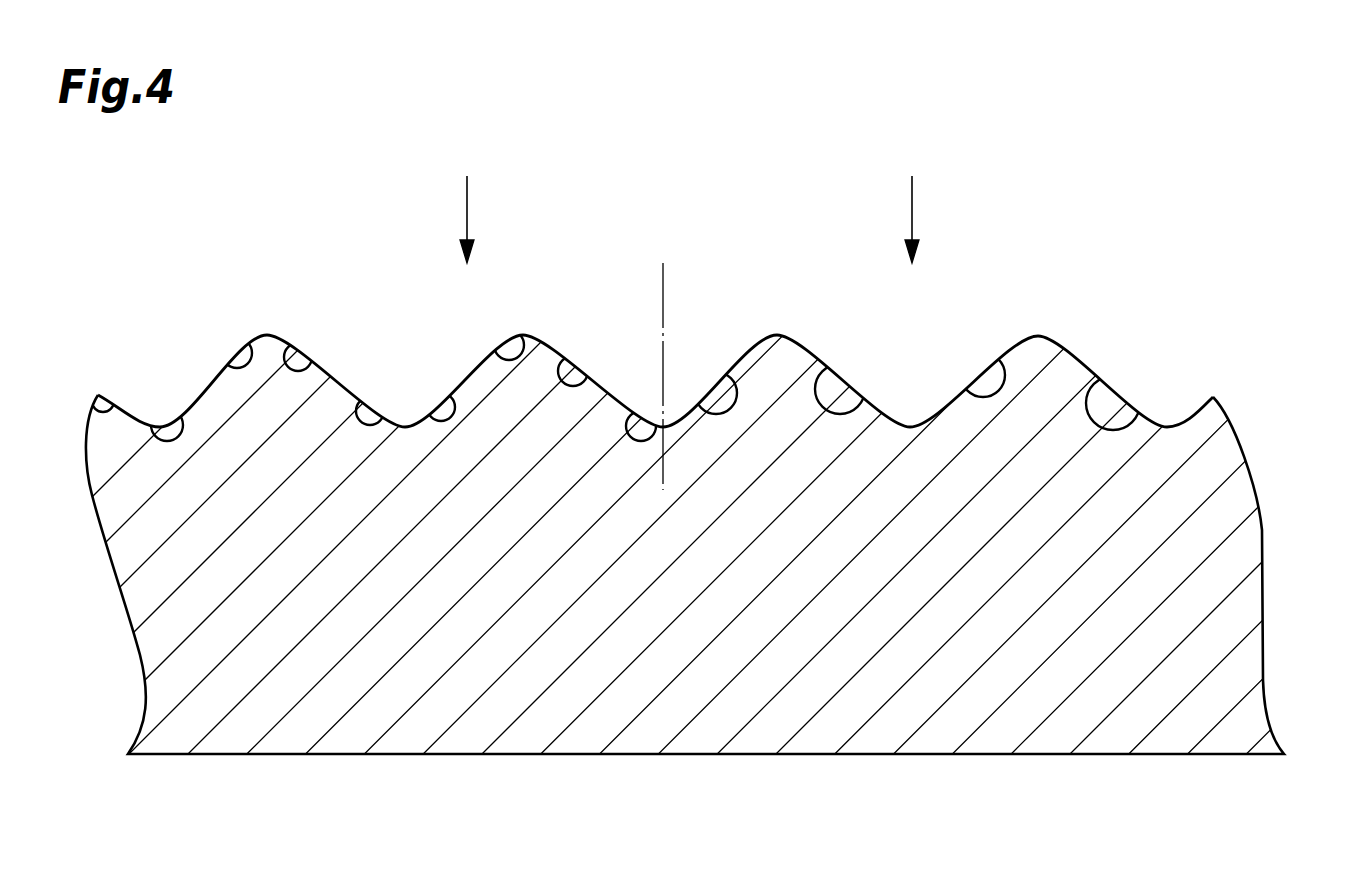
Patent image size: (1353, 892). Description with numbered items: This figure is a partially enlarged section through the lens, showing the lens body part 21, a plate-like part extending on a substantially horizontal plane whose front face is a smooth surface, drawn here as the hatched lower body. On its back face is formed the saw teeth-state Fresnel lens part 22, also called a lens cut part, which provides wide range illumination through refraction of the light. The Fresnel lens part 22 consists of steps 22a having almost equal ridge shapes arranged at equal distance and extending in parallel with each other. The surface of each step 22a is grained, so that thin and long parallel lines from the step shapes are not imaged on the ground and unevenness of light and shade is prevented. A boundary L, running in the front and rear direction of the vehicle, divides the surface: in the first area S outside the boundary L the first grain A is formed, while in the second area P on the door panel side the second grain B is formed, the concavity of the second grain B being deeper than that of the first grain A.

The lens body part 21 is at (1245, 550).
The Fresnel lens part 22 is at (1160, 308).
The step 22a is at (348, 390).
The first grain A is at (441, 405).
The second grain B is at (717, 397).
The first area S is at (469, 202).
The second area P is at (912, 202).
The boundary L is at (663, 458).